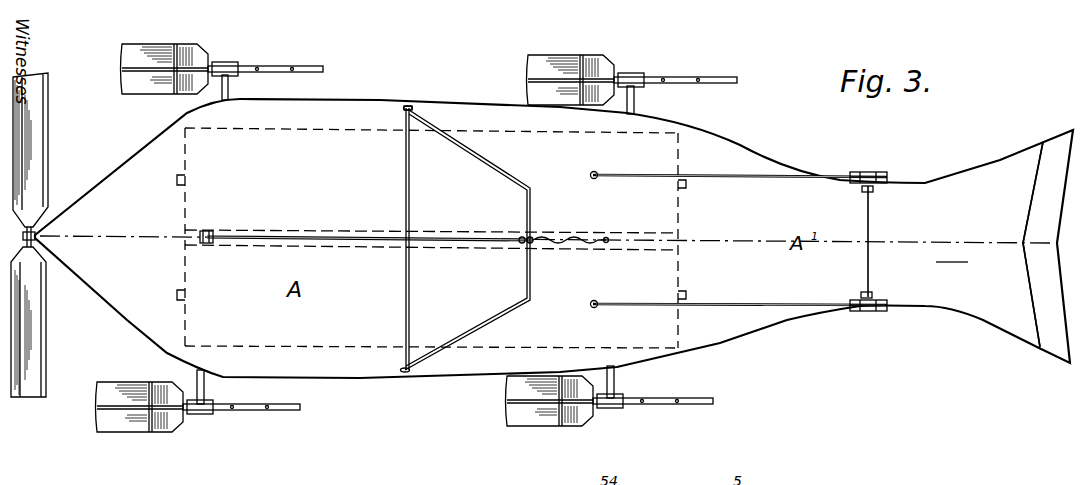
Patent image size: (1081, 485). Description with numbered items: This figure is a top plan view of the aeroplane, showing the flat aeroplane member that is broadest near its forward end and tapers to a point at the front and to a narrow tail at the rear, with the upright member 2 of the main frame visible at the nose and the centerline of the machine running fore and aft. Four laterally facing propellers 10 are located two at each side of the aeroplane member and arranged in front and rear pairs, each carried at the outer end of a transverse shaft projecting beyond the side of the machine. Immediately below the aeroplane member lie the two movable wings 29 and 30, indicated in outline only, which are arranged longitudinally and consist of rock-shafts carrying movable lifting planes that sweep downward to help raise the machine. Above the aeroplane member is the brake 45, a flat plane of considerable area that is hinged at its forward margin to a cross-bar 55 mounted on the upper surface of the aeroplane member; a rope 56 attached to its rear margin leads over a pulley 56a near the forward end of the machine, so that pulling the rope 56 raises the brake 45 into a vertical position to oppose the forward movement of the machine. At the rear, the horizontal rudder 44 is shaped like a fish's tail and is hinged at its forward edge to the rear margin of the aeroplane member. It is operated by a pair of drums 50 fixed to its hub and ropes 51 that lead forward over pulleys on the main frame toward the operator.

The upright member 2 is at (9, 223).
The laterally facing propeller 10 is at (234, 58).
The movable wing 29 is at (338, 126).
The movable wing 30 is at (319, 352).
The horizontal rudder 44 is at (989, 244).
The brake 45 is at (466, 239).
The drum 50 is at (868, 172).
The rope 51 is at (774, 180).
The cross-bar 55 is at (411, 104).
The rope 56 is at (229, 240).
The pulley 56a is at (207, 230).